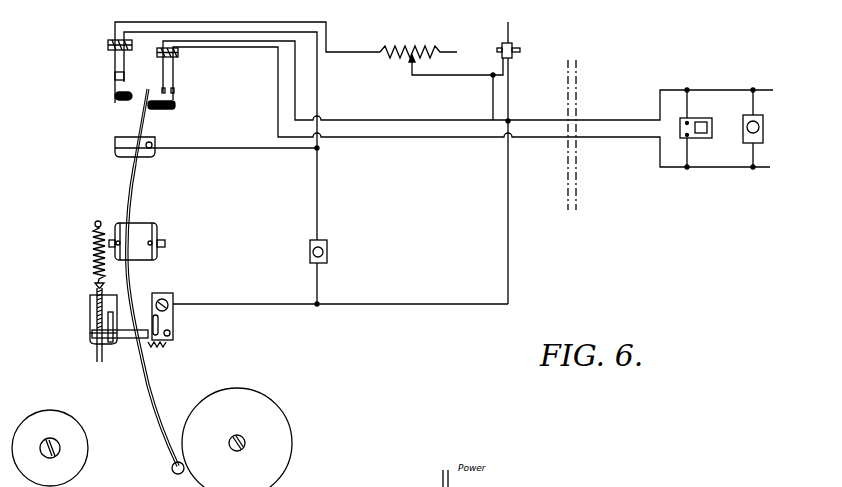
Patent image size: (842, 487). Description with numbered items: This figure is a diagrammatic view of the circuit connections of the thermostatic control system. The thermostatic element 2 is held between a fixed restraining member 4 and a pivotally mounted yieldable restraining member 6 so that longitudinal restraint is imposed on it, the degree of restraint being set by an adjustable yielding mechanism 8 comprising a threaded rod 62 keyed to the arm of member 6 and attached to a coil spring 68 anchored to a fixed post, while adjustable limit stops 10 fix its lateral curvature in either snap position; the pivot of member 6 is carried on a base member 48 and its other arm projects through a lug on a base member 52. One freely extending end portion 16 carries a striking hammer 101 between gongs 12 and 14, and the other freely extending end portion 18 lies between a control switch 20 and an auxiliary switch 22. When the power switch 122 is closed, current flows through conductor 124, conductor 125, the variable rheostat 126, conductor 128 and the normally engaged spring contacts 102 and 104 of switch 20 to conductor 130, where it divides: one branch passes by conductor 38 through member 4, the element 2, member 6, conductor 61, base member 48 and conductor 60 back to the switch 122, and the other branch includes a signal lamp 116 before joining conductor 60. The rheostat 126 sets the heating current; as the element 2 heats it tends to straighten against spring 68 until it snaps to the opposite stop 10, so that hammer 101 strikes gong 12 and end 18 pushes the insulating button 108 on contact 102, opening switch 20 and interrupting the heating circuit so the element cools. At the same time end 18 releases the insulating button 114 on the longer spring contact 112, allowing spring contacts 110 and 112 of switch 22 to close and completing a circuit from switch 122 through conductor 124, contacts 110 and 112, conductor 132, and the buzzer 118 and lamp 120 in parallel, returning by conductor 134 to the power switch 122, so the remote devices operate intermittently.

The thermostatic element 2 is at (138, 186).
The fixed restraining member 4 is at (154, 140).
The pivotally mounted yieldable restraining member 6 is at (122, 342).
The adjustable yielding mechanism 8 is at (79, 341).
The adjustable limit stops 10 is at (115, 238).
The bell or gong 12 is at (36, 422).
The bell or gong 14 is at (237, 437).
The freely extending end portion 16 is at (152, 385).
The freely extending end portion 18 is at (142, 101).
The control switch 20 is at (89, 67).
The auxiliary control switch 22 is at (180, 80).
The conductor 38 is at (195, 148).
The base member 48 is at (174, 318).
The base member 52 is at (90, 300).
The conductor 60 is at (174, 297).
The conductor 61 is at (162, 346).
The threaded rod 62 is at (97, 310).
The coil spring 68 is at (93, 243).
The striking button or hammer 101 is at (173, 466).
The spring contact 102 is at (113, 60).
The spring contact 104 is at (114, 70).
The insulating button 108 is at (115, 97).
The spring contact 110 is at (162, 72).
The spring contact 112 is at (175, 76).
The insulating button 114 is at (176, 105).
The signal lamp 116 is at (328, 252).
The buzzer 118 is at (697, 120).
The lamp 120 is at (745, 135).
The power switch 122 is at (515, 48).
The conductor 124 is at (348, 120).
The conductor 125 is at (422, 76).
The variable rheostat 126 is at (412, 50).
The conductor 128 is at (327, 35).
The conductor 130 is at (318, 62).
The conductor 132 is at (347, 138).
The conductor 134 is at (590, 120).